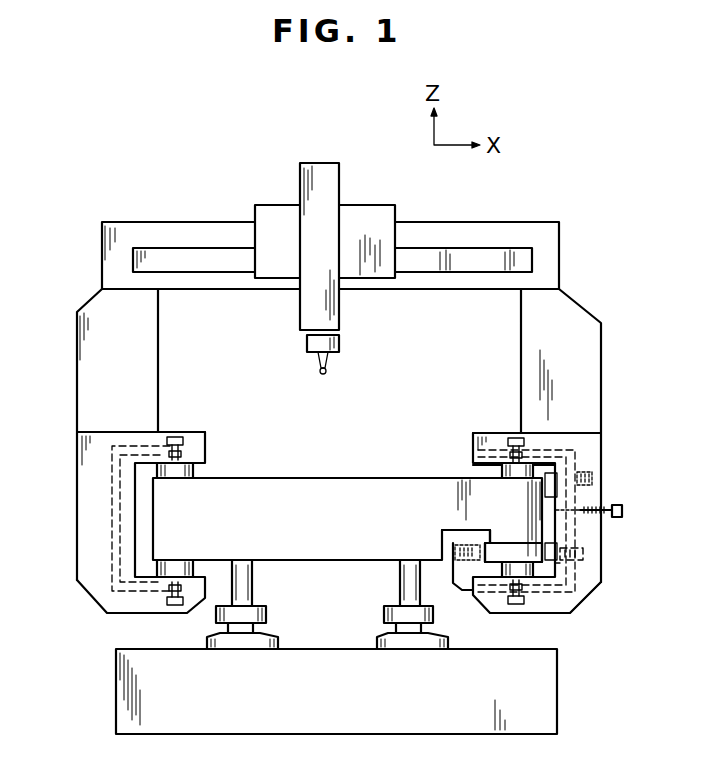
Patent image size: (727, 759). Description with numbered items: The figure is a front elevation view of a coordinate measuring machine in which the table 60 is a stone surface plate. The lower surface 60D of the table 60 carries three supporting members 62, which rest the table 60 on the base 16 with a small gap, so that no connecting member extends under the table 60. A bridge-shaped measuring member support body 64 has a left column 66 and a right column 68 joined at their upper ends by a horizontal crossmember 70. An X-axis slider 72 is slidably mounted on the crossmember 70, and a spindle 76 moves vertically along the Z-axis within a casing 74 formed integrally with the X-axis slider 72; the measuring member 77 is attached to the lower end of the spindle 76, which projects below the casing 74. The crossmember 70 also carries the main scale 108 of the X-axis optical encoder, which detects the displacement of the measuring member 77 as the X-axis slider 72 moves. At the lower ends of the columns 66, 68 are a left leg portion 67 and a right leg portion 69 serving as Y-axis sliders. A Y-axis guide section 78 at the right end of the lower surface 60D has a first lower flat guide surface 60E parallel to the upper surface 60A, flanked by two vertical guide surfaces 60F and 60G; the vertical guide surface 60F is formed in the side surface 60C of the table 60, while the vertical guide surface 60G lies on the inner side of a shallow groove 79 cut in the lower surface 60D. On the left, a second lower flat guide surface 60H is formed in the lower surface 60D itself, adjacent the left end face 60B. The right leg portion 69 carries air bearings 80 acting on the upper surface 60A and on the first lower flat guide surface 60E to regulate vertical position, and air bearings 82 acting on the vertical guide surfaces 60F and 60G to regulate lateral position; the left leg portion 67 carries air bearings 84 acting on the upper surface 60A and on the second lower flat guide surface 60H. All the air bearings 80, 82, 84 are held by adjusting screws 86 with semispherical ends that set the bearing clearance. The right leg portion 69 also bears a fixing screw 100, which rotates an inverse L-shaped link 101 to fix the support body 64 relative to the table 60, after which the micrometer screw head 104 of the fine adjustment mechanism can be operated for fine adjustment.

The base 16 is at (557, 700).
The table 60 is at (392, 477).
The upper surface of the table 60A is at (318, 477).
The table left end face 60B is at (147, 515).
The side surface of the table 60C is at (566, 520).
The lower surface of the table 60D is at (327, 562).
The first lower flat guide surface 60E is at (500, 600).
The vertical guide surface 60F is at (557, 565).
The vertical guide surface 60G is at (478, 565).
The second lower flat guide surface 60H is at (172, 565).
The supporting members 62 is at (252, 590).
The measuring member support body 64 is at (530, 220).
The left column 66 is at (77, 350).
The left leg portion 67 is at (77, 515).
The right column 68 is at (601, 378).
The right leg portion 69 is at (601, 440).
The crossmember 70 is at (462, 222).
The X-axis slider 72 is at (384, 206).
The casing 74 is at (340, 172).
The spindle 76 is at (340, 336).
The measuring member 77 is at (328, 372).
The Y-axis guide section 78 is at (578, 622).
The groove 79 is at (445, 540).
The air bearings 80 is at (473, 468).
The air bearings 82 is at (487, 567).
The air bearings 84 is at (195, 470).
The adjusting screws 86 is at (180, 437).
The fixing screw 100 is at (617, 505).
The inverse L-shaped link 101 is at (575, 520).
The micrometer screw head 104 is at (590, 478).
The main scale 108 is at (172, 255).